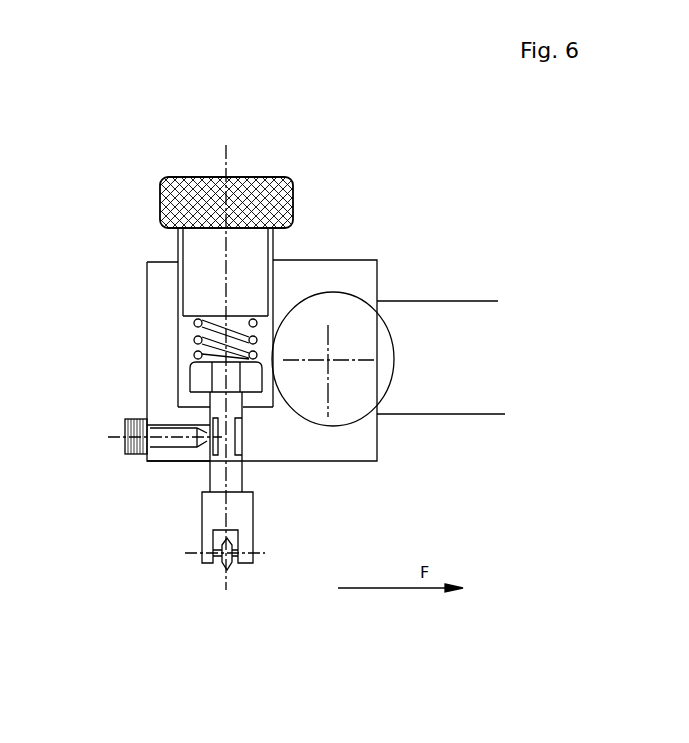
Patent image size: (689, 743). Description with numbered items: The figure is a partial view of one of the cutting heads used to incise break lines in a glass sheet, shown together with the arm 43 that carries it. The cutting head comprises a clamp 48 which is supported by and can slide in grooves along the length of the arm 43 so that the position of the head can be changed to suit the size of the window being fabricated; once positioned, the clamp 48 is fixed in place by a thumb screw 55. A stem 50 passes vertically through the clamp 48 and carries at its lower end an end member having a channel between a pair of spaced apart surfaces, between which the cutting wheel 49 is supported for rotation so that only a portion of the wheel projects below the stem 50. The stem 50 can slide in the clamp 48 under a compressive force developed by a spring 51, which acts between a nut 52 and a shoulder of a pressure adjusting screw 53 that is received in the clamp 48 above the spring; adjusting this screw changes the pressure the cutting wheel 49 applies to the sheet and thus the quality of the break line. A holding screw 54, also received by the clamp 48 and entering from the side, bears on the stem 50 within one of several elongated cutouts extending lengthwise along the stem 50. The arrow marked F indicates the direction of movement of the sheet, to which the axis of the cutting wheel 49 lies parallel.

The pressure adjusting screw 53 is at (258, 250).
The clamp 48 is at (360, 278).
The thumb screw 55 is at (378, 338).
The arm 43 is at (456, 340).
The spring 51 is at (203, 347).
The holding screw 54 is at (173, 435).
The nut 52 is at (303, 488).
The stem 50 is at (216, 466).
The cutting wheel 49 is at (222, 567).